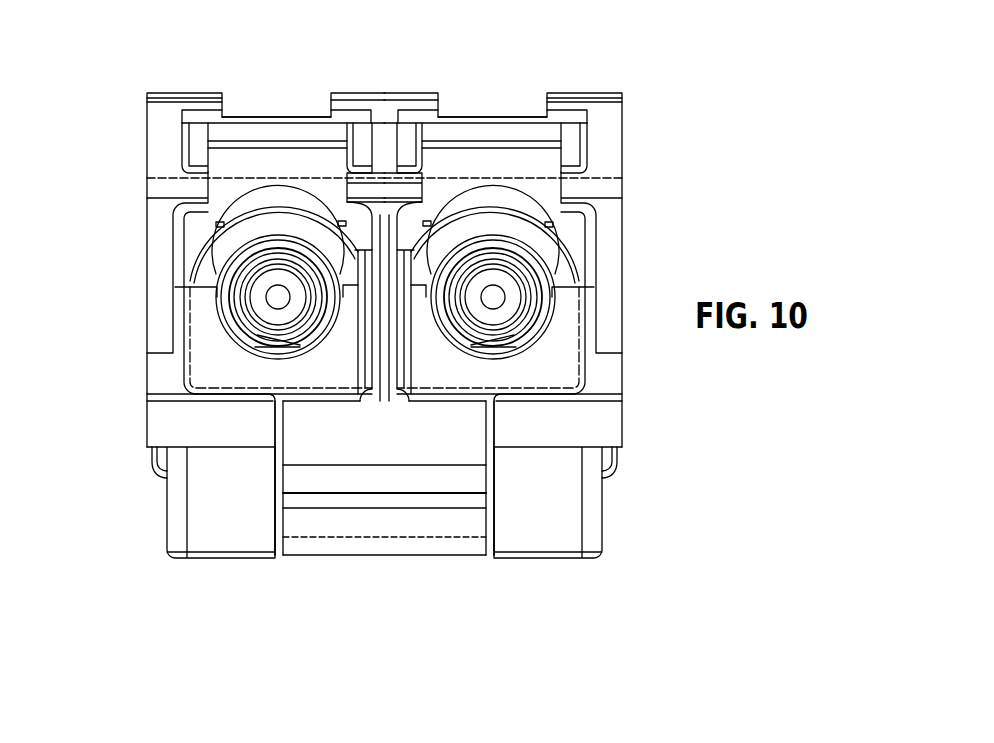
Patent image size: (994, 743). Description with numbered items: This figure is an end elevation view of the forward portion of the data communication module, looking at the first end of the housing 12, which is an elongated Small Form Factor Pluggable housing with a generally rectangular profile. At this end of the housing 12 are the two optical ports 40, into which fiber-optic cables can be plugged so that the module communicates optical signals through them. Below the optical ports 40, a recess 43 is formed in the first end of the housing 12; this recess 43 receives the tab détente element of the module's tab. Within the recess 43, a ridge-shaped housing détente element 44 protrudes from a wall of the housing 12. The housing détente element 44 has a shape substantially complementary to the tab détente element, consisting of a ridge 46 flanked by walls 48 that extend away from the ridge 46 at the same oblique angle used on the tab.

The housing 12 is at (147, 271).
The optical ports 40 is at (266, 190).
The recess 43 is at (398, 445).
The housing détente element 44 is at (350, 553).
The ridge 46 is at (387, 500).
The walls 48 is at (321, 527).